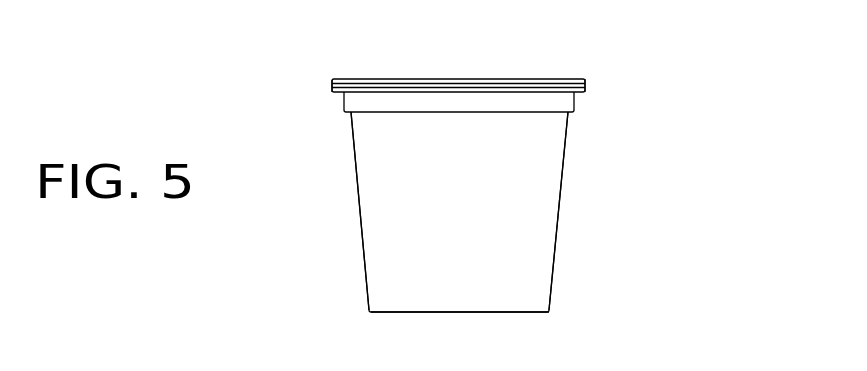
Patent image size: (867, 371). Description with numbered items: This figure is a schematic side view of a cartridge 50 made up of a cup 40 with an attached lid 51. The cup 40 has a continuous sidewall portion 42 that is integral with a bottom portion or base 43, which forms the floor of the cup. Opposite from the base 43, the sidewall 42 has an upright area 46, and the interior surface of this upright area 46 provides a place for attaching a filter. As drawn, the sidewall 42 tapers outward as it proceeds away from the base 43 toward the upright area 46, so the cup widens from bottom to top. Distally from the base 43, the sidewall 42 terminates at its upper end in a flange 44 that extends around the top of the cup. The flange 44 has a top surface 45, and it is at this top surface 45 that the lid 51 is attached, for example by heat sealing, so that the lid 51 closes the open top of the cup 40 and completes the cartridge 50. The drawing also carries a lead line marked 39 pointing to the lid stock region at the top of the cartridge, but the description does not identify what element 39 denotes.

The lid 39 is at (428, 79).
The cup 40 is at (558, 232).
The sidewall portion 42 is at (359, 218).
The base 43 is at (460, 313).
The flange 44 is at (332, 87).
The top surface 45 is at (585, 87).
The upright area 46 is at (428, 103).
The cartridge 50 is at (638, 139).
The lid 51 is at (585, 82).